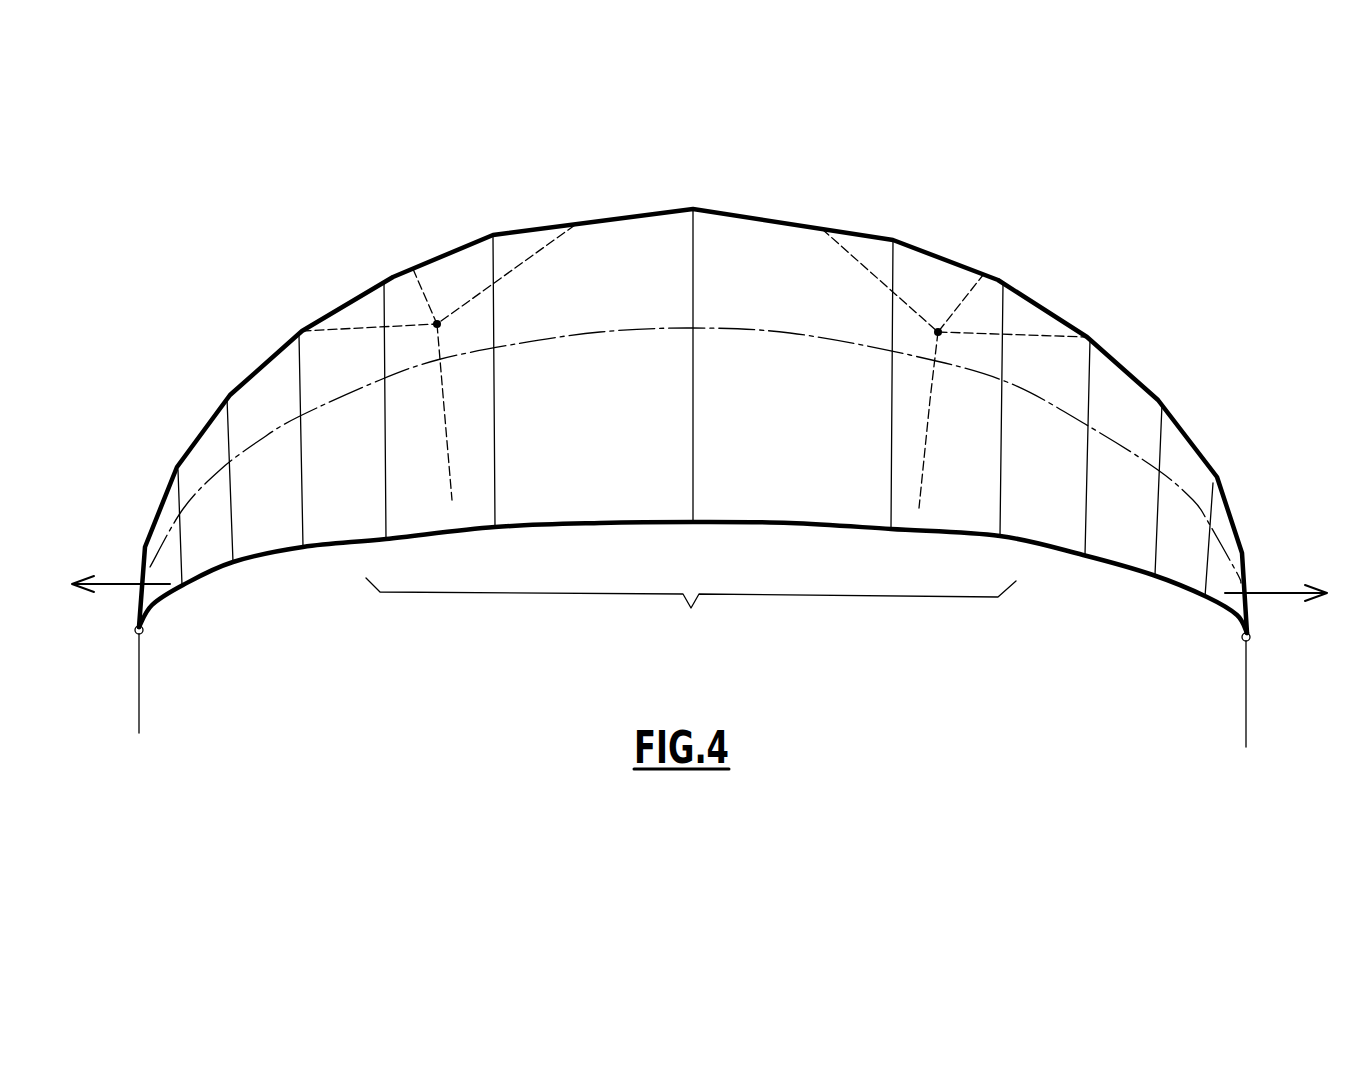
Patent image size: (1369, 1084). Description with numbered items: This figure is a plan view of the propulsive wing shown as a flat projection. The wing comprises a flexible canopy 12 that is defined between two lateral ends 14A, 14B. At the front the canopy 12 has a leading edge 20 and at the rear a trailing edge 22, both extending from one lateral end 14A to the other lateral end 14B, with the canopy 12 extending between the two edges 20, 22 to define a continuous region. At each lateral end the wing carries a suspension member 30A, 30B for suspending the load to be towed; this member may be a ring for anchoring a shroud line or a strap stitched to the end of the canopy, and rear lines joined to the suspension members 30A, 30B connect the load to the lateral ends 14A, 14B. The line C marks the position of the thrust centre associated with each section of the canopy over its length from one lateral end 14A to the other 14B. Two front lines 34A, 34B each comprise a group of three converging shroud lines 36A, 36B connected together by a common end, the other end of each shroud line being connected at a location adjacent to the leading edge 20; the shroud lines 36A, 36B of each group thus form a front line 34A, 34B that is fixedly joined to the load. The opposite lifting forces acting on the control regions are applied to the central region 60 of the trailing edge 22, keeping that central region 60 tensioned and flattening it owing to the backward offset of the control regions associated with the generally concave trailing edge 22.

The flexible canopy 12 is at (1125, 380).
The leading edge 20 is at (793, 220).
The trailing edge 22 is at (715, 525).
The line C is at (760, 332).
The lateral end 14A is at (1256, 576).
The lateral end 14B is at (136, 566).
The suspension member 30A is at (1249, 639).
The suspension member 30B is at (136, 632).
The front line 34A is at (930, 400).
The front line 34B is at (443, 395).
The shroud lines 36A is at (888, 293).
The shroud lines 36B is at (503, 282).
The central region of the trailing edge 60 is at (691, 613).